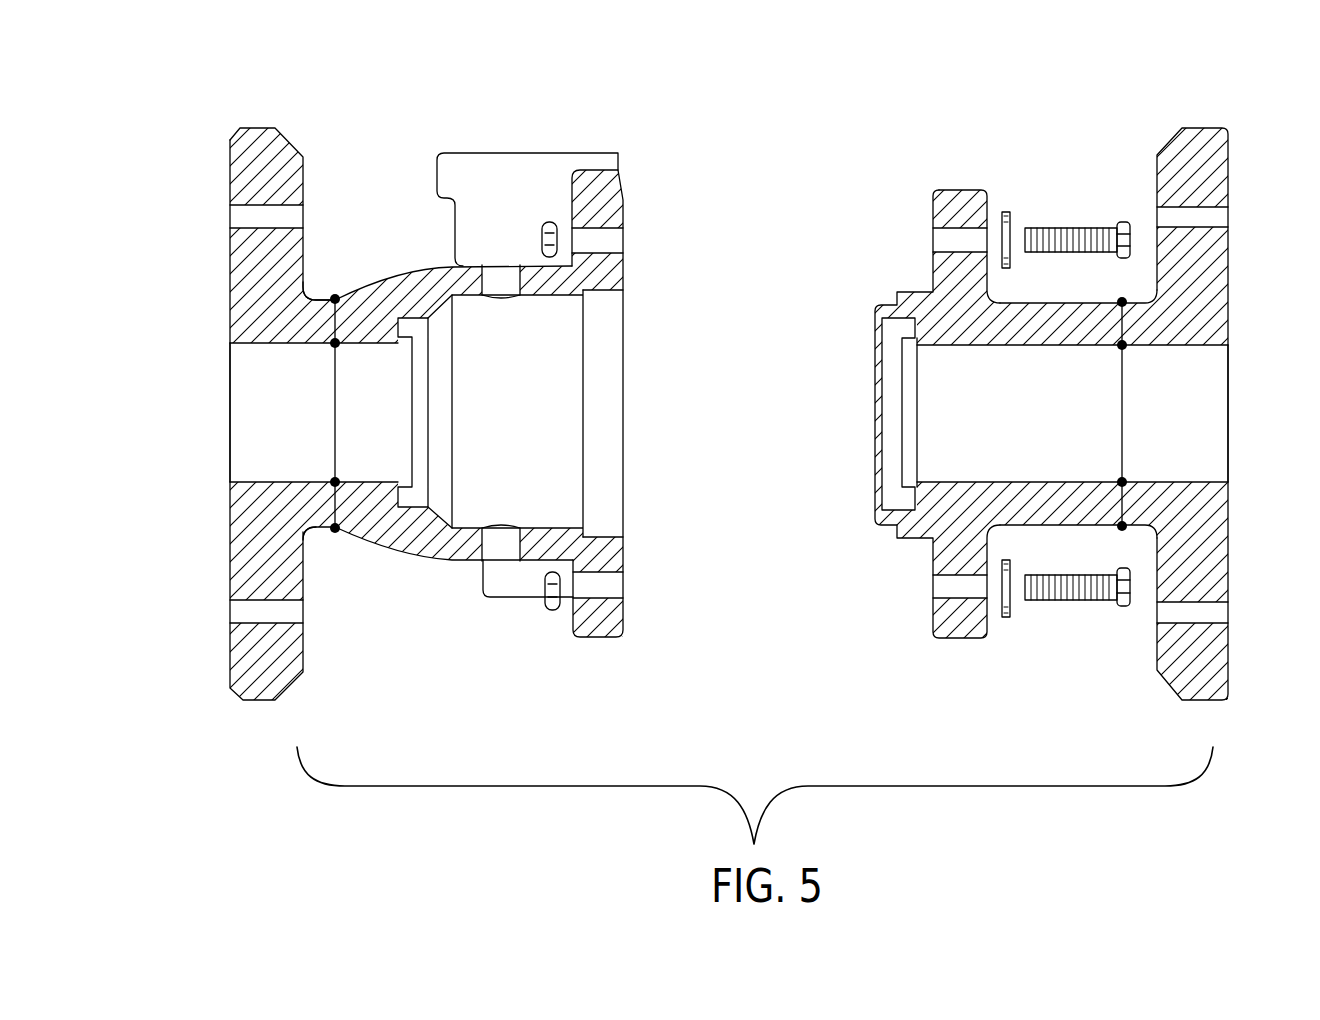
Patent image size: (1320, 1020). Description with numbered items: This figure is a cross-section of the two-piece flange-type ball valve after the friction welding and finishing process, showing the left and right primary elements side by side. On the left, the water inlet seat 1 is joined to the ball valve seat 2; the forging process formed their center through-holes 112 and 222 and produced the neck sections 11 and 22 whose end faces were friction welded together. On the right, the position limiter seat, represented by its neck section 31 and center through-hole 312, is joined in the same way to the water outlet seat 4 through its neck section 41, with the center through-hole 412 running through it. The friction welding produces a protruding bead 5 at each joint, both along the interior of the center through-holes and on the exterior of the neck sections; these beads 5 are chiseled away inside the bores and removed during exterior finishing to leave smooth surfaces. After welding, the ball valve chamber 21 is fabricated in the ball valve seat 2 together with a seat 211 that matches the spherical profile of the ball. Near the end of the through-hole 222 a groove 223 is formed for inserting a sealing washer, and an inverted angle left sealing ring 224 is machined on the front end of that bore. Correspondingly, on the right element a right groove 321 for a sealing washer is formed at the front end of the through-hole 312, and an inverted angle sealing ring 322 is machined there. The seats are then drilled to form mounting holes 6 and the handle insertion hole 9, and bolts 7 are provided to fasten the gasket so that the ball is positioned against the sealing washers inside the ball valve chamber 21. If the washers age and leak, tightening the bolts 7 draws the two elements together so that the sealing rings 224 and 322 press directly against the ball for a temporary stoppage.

The water inlet seat 1 is at (232, 148).
The neck section 11 is at (316, 293).
The center through-hole 112 is at (250, 390).
The ball valve seat 2 is at (612, 165).
The ball valve chamber 21 is at (558, 428).
The neck section 22 is at (385, 284).
The center through-hole 222 is at (360, 408).
The groove 223 is at (410, 503).
The inverted angle left sealing ring 224 is at (413, 497).
The seat 211 is at (504, 535).
The handle insertion hole 9 is at (505, 275).
The protruding bead 5 is at (338, 296).
The mounting holes 6 is at (242, 217).
The bolts 7 is at (1060, 228).
The water outlet seat 4 is at (1218, 157).
The neck section 41 is at (1150, 297).
The center through-hole 412 is at (1215, 378).
The neck section 31 is at (1040, 302).
The center through-hole 312 is at (1112, 398).
The right groove 321 is at (908, 502).
The inverted angle sealing ring 322 is at (910, 342).